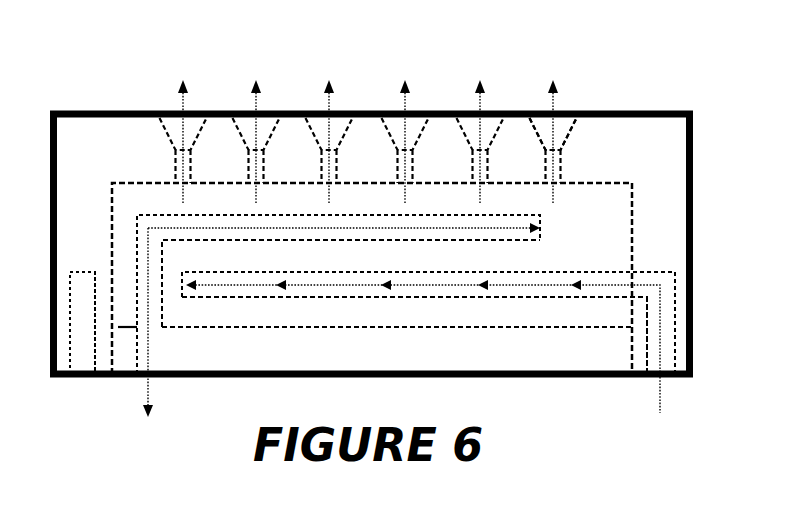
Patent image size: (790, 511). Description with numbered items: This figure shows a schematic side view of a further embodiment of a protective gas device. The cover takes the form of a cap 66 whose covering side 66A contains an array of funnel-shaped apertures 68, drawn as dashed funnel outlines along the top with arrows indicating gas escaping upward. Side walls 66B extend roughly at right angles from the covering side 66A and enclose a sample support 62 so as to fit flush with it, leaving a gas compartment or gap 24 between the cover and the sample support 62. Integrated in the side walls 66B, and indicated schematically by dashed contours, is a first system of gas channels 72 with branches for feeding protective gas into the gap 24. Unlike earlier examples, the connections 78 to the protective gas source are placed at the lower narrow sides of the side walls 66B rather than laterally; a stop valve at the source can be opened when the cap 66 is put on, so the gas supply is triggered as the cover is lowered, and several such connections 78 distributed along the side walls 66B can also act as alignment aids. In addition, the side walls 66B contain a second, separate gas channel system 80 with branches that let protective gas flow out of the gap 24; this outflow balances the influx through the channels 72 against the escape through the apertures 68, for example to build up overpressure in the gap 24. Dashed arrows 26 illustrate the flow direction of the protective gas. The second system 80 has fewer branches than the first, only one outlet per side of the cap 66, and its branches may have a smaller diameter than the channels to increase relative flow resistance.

The cap 66 is at (122, 96).
The nozzles 68 is at (285, 82).
The covering side 66A is at (372, 262).
The gas compartment or gap 24 is at (613, 225).
The dashed arrows 26 is at (192, 228).
The sample support 62 is at (397, 348).
The side walls 66B is at (435, 301).
The second gas channel system 80 is at (153, 365).
The gas channels 72 is at (83, 358).
The connections 78 is at (397, 340).